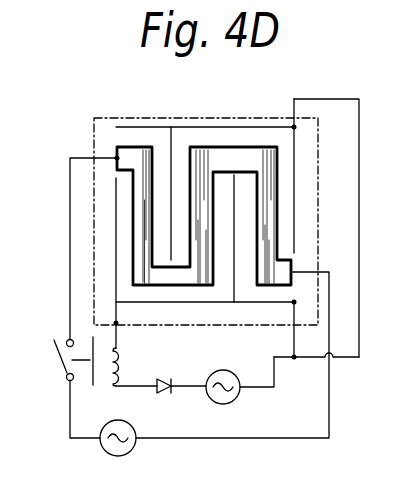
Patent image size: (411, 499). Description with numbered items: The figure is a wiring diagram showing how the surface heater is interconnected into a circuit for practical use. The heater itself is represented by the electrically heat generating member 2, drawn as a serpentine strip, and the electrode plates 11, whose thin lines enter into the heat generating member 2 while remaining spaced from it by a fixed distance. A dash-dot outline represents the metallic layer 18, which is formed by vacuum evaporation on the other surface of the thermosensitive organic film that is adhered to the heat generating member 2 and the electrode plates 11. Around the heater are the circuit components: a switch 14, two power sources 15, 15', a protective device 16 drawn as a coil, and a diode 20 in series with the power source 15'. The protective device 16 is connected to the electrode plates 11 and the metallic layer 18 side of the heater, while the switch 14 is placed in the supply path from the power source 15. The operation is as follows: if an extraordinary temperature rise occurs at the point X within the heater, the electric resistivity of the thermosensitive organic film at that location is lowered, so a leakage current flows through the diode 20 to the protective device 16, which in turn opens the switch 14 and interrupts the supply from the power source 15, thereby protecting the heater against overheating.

The electrically heat generating member 2 is at (228, 155).
The electrode plate 11 is at (182, 127).
The metallic layer 18 is at (94, 141).
The point X is at (247, 228).
The switch 14 is at (60, 360).
The protective device 16 is at (124, 366).
The diode 20 is at (163, 392).
The power source 15 is at (99, 446).
The power source 15' is at (234, 373).